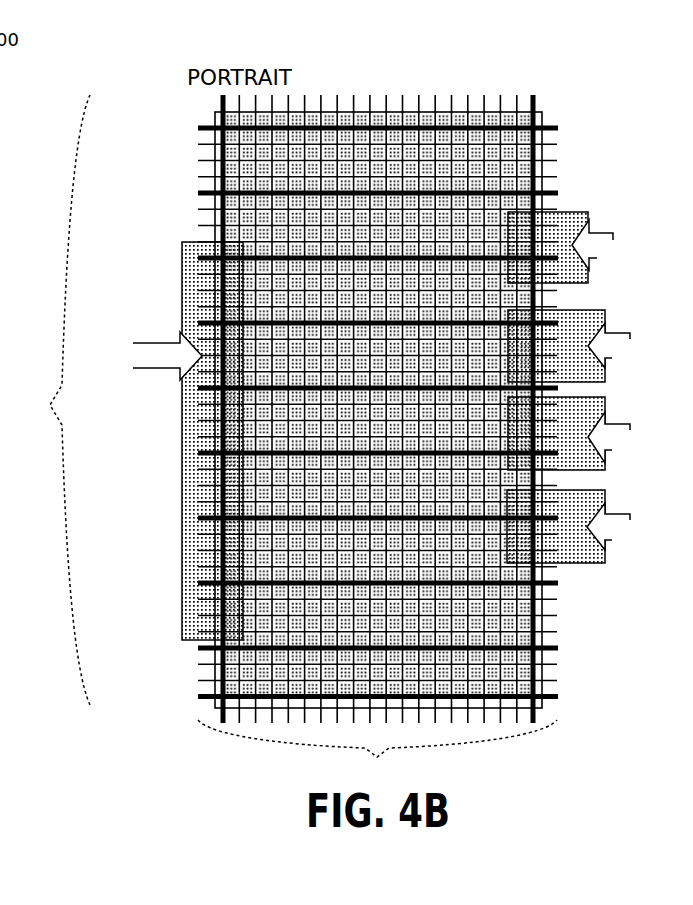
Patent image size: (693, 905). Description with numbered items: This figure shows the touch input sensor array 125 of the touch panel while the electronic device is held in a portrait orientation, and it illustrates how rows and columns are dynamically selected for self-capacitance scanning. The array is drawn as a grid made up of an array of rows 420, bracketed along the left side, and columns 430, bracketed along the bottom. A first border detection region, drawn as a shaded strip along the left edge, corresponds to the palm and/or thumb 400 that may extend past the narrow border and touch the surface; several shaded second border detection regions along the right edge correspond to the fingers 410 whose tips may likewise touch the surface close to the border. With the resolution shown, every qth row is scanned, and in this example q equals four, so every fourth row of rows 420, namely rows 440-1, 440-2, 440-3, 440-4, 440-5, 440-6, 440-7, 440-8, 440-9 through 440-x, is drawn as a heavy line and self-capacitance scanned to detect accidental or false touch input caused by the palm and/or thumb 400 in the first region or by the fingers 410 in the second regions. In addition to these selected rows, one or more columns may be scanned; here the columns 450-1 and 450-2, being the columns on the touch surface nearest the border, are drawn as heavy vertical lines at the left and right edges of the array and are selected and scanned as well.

The touch input sensor array 125 is at (377, 82).
The palm and/or thumb 400 is at (177, 441).
The fingers 410 is at (573, 387).
The rows 420 is at (52, 400).
The columns 430 is at (377, 753).
The row 440-1 is at (164, 128).
The row 440-2 is at (164, 193).
The row 440-3 is at (158, 258).
The row 440-4 is at (158, 323).
The row 440-5 is at (158, 388).
The row 440-6 is at (158, 453).
The row 440-7 is at (158, 518).
The row 440-8 is at (158, 583).
The row 440-9 is at (158, 648).
The row 440-x is at (164, 696).
The column 450-1 is at (223, 767).
The column 450-2 is at (533, 767).